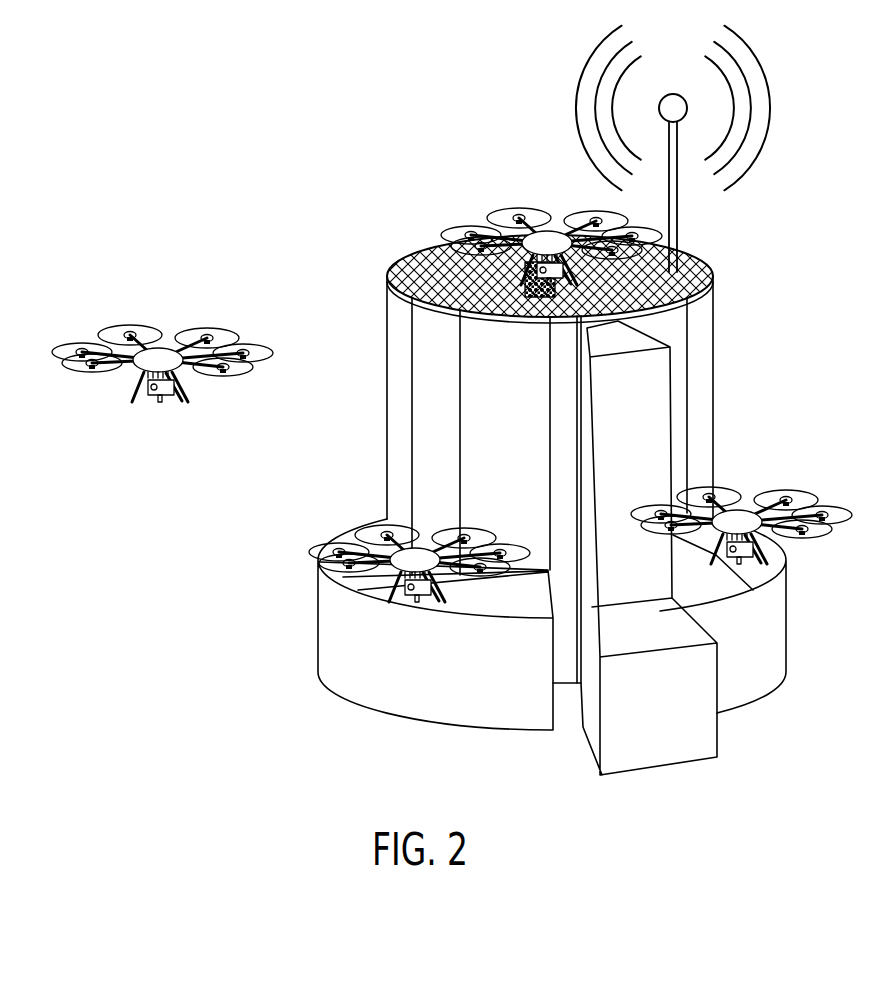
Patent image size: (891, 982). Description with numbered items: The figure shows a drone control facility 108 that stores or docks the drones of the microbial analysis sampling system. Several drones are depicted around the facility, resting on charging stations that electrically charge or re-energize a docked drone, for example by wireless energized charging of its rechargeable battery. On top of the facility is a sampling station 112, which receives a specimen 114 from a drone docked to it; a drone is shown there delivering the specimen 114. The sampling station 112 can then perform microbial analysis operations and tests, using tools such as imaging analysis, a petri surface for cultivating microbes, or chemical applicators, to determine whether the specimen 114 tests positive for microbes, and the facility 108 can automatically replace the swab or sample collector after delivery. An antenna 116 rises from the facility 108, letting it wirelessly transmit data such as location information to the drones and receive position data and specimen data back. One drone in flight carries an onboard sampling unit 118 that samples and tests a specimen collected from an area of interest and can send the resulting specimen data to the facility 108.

The drone control facility 108 is at (713, 360).
The sampling station 112 is at (412, 262).
The specimen 114 is at (535, 298).
The antenna 116 is at (671, 94).
The onboard sampling unit 118 is at (155, 416).